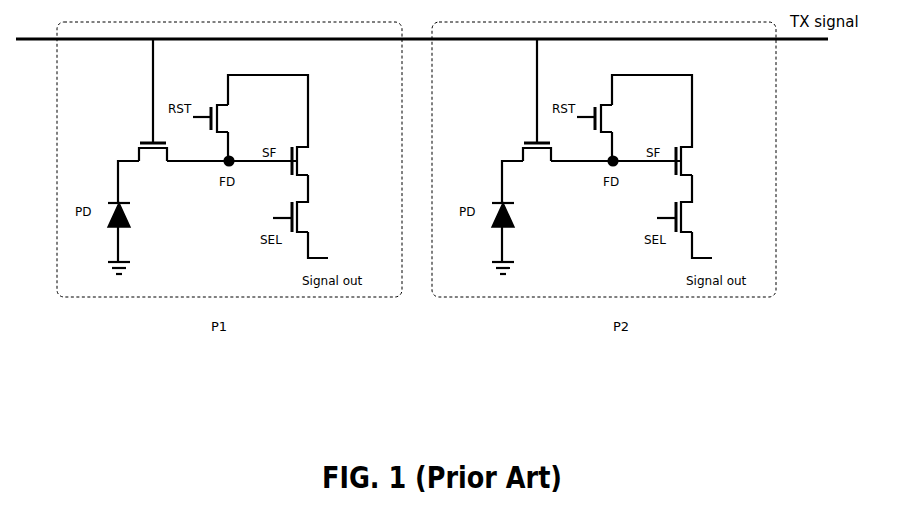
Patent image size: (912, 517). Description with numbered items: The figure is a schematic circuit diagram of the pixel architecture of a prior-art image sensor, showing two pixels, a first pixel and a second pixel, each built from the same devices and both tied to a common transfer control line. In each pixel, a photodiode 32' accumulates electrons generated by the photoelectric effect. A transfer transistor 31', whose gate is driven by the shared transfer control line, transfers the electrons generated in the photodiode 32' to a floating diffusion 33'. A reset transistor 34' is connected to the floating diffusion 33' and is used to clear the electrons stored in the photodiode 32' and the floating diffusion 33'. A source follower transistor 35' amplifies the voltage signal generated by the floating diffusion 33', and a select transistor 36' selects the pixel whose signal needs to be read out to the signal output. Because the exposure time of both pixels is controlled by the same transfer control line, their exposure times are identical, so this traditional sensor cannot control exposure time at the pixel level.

The transfer transistor 31' is at (137, 138).
The photodiode 32' is at (140, 238).
The floating diffusion 33' is at (203, 181).
The reset transistor 34' is at (207, 96).
The source follower transistor 35' is at (331, 159).
The select transistor 36' is at (322, 217).